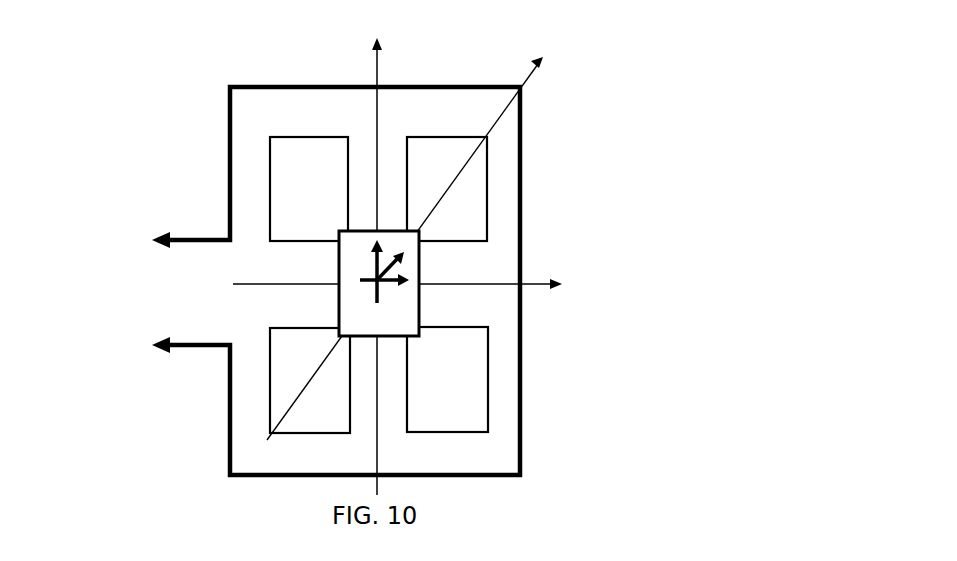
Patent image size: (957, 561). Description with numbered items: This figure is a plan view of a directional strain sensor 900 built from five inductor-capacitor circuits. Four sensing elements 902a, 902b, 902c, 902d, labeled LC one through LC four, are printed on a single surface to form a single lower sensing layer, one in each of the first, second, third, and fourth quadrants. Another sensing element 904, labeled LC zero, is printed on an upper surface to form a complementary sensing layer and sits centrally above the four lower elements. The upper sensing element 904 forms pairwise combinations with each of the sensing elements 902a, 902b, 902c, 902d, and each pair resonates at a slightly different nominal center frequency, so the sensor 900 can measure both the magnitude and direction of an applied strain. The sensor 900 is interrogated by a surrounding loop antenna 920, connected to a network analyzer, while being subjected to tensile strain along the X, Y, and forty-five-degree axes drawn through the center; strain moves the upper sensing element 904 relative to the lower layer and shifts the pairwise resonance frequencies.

The sensor 900 is at (565, 426).
The loop antenna 920 is at (217, 114).
The sensing element 902a is at (493, 187).
The sensing element 902b is at (268, 157).
The sensing element 902c is at (315, 423).
The sensing element 902d is at (500, 380).
The upper sensing element 904 is at (437, 263).